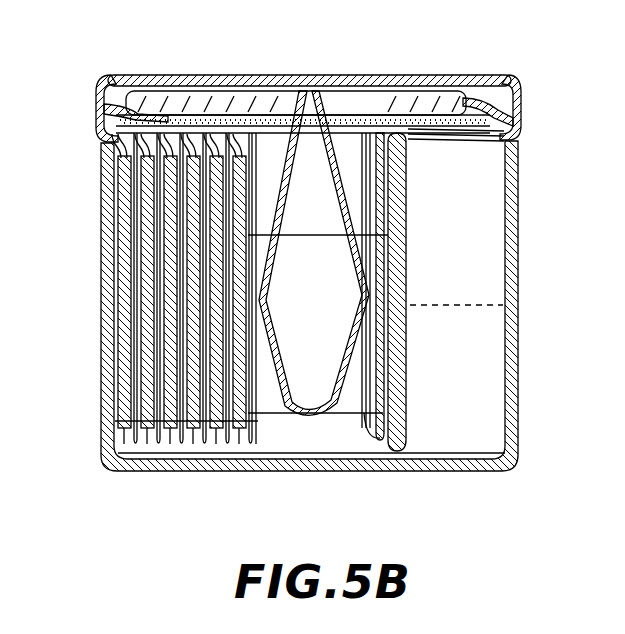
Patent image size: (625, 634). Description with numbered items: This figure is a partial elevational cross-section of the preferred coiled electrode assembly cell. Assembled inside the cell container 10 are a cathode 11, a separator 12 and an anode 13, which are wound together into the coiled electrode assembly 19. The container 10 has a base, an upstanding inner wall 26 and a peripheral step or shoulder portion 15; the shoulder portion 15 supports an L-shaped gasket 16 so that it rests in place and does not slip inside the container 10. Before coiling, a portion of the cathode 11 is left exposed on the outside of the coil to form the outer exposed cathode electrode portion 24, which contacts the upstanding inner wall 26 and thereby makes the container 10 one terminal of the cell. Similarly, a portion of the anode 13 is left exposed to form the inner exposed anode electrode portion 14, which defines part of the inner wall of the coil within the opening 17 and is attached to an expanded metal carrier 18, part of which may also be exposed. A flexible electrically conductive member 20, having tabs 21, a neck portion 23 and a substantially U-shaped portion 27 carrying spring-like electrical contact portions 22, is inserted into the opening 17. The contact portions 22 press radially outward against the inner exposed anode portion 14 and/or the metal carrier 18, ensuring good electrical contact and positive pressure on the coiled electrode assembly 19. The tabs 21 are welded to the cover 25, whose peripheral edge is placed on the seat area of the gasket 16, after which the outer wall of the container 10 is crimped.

The cell container 10 is at (512, 263).
The cathode 11 is at (106, 417).
The separator 12 is at (120, 370).
The anode 13 is at (115, 418).
The inner exposed anode electrode portion 14 is at (353, 416).
The step or shoulder portion 15 is at (100, 130).
The L-shaped gasket 16 is at (470, 80).
The opening 17 is at (317, 425).
The expanded metal carrier 18 is at (190, 238).
The coiled electrode assembly 19 is at (188, 295).
The flexible electrically conductive member 20 is at (347, 208).
The tabs 21 is at (212, 68).
The spring-like electrical contact portions 22 is at (355, 291).
The neck portion 23 is at (316, 95).
The outer exposed cathode electrode portion 24 is at (100, 232).
The cover 25 is at (442, 72).
The upstanding inner wall 26 is at (504, 197).
The substantially U-shaped portion 27 is at (352, 358).